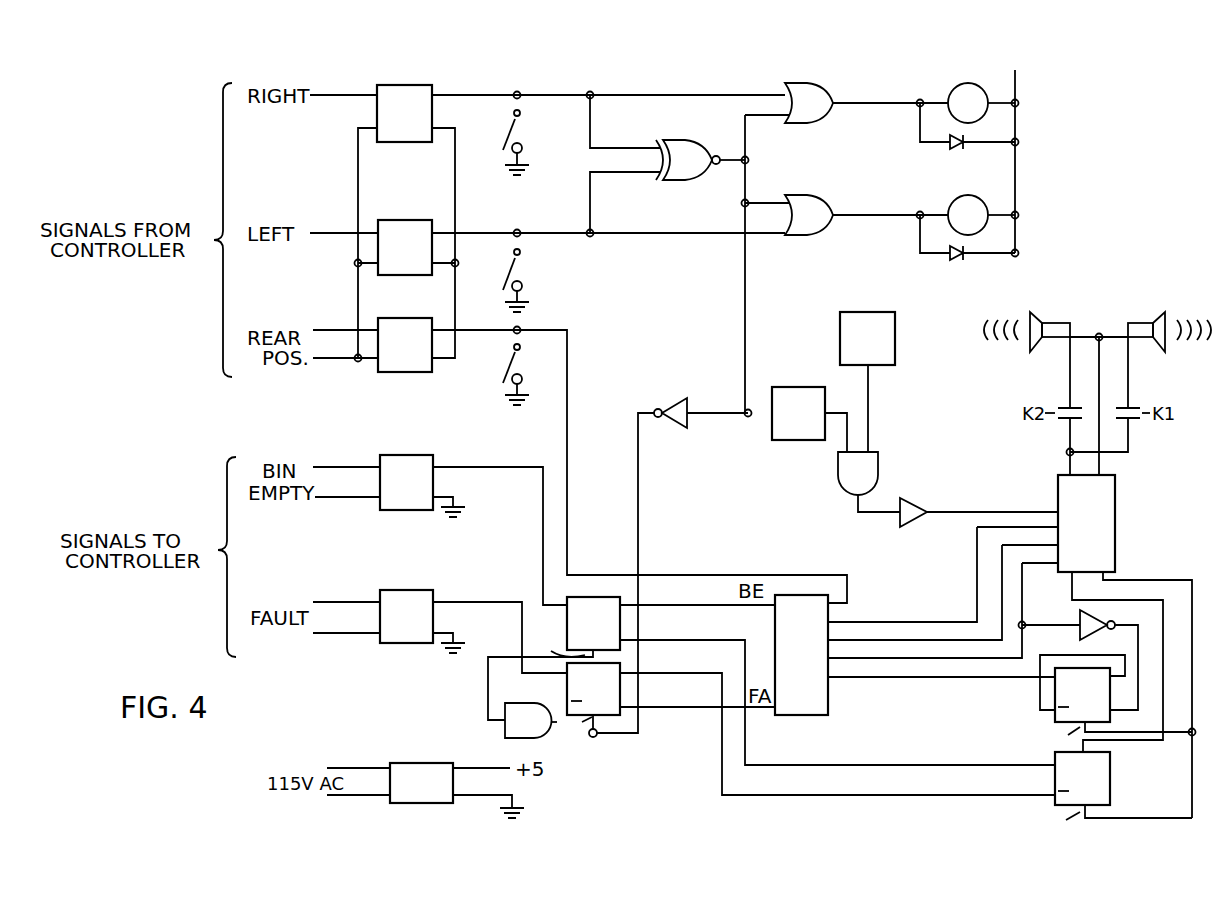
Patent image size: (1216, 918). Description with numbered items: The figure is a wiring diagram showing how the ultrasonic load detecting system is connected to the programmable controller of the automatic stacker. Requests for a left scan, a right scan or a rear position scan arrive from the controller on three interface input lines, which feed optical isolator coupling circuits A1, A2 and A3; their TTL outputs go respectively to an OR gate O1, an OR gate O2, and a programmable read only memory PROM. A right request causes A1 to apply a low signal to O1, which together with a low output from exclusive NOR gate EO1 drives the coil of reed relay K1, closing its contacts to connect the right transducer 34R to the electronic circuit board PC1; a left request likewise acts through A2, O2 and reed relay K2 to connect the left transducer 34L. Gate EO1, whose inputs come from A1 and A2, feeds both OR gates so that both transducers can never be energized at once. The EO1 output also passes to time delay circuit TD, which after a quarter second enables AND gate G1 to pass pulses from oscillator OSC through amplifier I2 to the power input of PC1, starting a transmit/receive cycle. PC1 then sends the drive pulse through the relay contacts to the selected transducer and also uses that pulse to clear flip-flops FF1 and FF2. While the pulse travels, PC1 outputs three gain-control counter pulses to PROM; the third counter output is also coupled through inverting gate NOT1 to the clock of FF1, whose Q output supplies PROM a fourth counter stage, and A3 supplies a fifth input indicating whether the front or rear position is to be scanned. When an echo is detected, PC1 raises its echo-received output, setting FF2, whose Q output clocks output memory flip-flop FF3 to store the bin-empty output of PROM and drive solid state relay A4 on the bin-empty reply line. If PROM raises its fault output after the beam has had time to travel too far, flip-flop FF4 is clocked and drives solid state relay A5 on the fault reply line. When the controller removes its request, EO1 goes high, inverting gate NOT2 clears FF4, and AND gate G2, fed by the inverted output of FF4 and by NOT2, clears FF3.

The left ultrasonic electrostatic transducer 34L is at (1027, 316).
The right ultrasonic electrostatic transducer 34R is at (1163, 318).
The optical isolator coupling circuit A1 is at (547, 221).
The optical isolator coupling circuit A2 is at (547, 247).
The optical isolator coupling circuit A3 is at (580, 460).
The solid state relay A4 is at (440, 530).
The solid state relay A5 is at (440, 631).
The exclusive NOR gate EO1 is at (700, 160).
The OR gate O1 is at (846, 103).
The OR gate O2 is at (846, 215).
The reed relay K1 is at (967, 116).
The reed relay K2 is at (967, 227).
The inverting gate NOT2 is at (680, 430).
The inverting gate NOT1 is at (1080, 616).
The time delay circuit TD is at (809, 419).
The oscillator OSC is at (867, 382).
The AND gate G1 is at (869, 482).
The AND gate G2 is at (531, 720).
The amplifier I2 is at (922, 506).
The electronic circuit board PC1 is at (1010, 646).
The programmable read only memory PROM is at (915, 655).
The flip-flop FF1 is at (1118, 699).
The flip-flop FF2 is at (1118, 790).
The data-storing output memory flip-flop FF3 is at (771, 681).
The output memory flip-flop FF4 is at (806, 729).